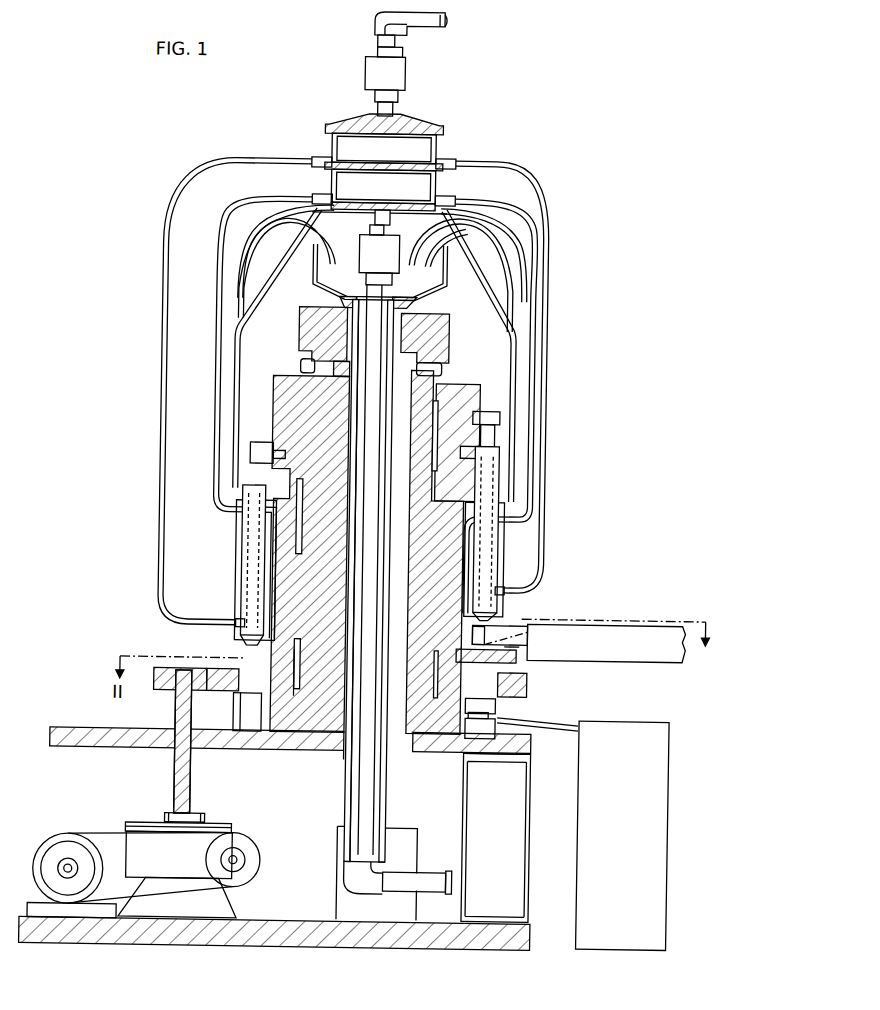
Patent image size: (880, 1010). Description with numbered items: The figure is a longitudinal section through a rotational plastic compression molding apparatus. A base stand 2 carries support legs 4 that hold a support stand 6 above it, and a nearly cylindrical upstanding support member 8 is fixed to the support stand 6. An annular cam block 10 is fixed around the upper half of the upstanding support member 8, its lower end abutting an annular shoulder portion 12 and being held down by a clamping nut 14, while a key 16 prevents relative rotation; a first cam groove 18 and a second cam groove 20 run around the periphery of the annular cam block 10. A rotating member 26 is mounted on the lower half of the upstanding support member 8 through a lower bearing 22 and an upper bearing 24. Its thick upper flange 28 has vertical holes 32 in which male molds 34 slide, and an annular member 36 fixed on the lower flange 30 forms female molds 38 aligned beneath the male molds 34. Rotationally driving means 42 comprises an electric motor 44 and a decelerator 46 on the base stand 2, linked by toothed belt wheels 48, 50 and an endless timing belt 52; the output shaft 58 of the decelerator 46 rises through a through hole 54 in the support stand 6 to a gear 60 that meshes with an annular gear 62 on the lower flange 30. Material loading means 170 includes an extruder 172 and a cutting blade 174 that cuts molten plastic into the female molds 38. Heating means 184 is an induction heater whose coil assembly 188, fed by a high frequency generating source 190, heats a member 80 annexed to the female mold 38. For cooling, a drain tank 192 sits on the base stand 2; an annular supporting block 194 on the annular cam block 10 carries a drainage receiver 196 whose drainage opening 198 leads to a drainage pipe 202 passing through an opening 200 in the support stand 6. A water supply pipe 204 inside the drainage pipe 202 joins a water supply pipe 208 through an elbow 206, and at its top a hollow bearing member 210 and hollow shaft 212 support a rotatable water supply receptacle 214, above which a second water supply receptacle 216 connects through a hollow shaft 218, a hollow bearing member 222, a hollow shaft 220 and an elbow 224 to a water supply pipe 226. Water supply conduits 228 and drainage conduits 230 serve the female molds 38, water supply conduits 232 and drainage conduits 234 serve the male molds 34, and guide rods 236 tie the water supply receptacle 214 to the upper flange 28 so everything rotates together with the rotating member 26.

The base stand 2 is at (302, 922).
The support leg 4 is at (466, 816).
The support stand 6 is at (250, 752).
The upstanding support member 8 is at (320, 518).
The annular cam block 10 is at (452, 384).
The annular shoulder portion 12 is at (430, 490).
The clamping nut 14 is at (294, 368).
The key 16 is at (431, 440).
The first cam groove 18 is at (282, 466).
The second cam groove 20 is at (272, 450).
The lower bearing 22 is at (303, 662).
The upper bearing 24 is at (300, 516).
The rotating member 26 is at (305, 590).
The upper flange 28 is at (240, 522).
The lower flange 30 is at (248, 702).
The hole 32 is at (248, 568).
The male mold 34 is at (238, 619).
The annular member 36 is at (504, 652).
The female mold 38 is at (505, 645).
The rotationally driving means 42 is at (114, 796).
The electric motor 44 is at (70, 838).
The decelerator 46 is at (222, 830).
The toothed belt wheel 48 is at (100, 842).
The toothed belt wheel 50 is at (252, 848).
The endless timing belt 52 is at (139, 826).
The through hole 54 is at (195, 758).
The output shaft 58 is at (198, 808).
The gear 60 is at (165, 694).
The annular gear 62 is at (220, 694).
The member annexed to the female mold 80 is at (462, 752).
The material loading means 170 is at (524, 620).
The extruder 172 is at (606, 622).
The cutting blade 174 is at (490, 630).
The heating means 184 is at (605, 710).
The coil assembly 188 is at (505, 712).
The high frequency generating source 190 is at (645, 718).
The drain tank 192 is at (340, 860).
The annular supporting block 194 is at (446, 313).
The drainage receiver 196 is at (441, 275).
The drainage opening 198 is at (385, 292).
The opening 200 is at (334, 760).
The drainage pipe 202 is at (352, 408).
The water supply pipe 204 is at (358, 495).
The elbow 206 is at (362, 890).
The water supply pipe 208 is at (430, 872).
The hollow bearing member 210 is at (356, 268).
The hollow shaft 212 is at (364, 229).
The water supply receptacle 214 is at (364, 196).
The water supply receptacle 216 is at (363, 159).
The hollow shaft 218 is at (386, 108).
The hollow shaft 220 is at (388, 40).
The hollow bearing member 222 is at (397, 74).
The elbow 224 is at (368, 33).
The water supply pipe 226 is at (437, 28).
The water supply conduit 228 is at (232, 232).
The drainage conduit 230 is at (259, 232).
The water supply conduit 232 is at (180, 183).
The drainage conduit 234 is at (221, 208).
The guide rod 236 is at (258, 290).